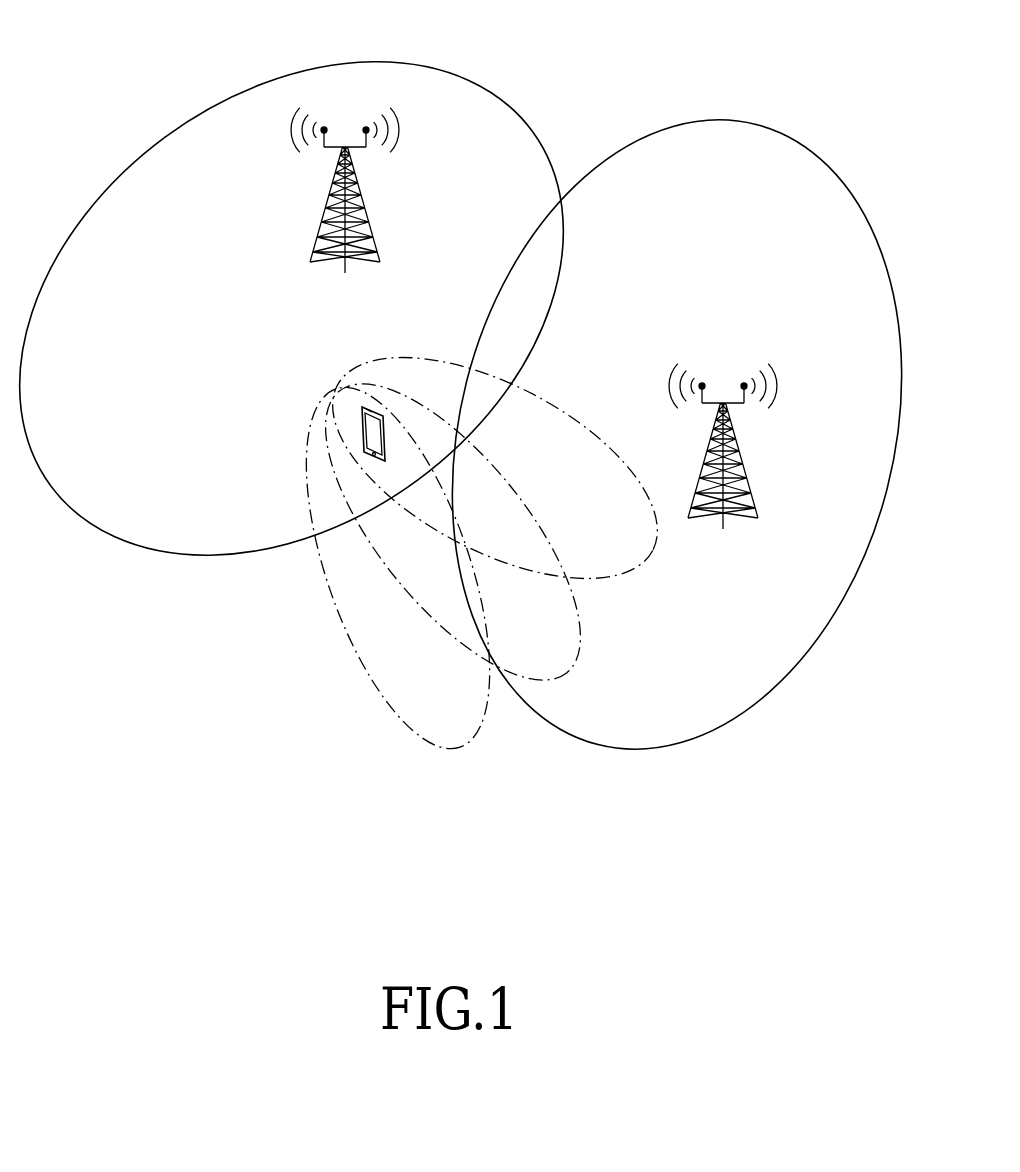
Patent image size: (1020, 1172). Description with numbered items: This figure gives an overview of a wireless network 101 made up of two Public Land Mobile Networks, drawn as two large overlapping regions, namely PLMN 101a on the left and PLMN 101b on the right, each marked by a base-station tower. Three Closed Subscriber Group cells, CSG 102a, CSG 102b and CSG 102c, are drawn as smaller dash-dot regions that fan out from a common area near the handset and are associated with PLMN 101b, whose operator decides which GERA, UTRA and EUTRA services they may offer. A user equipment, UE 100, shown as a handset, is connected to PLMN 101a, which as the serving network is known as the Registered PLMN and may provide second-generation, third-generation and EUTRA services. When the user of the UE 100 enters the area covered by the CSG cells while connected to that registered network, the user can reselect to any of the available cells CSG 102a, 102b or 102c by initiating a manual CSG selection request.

The UE 100 is at (360, 430).
The wireless network 101 is at (483, 462).
The PLMN 101a is at (385, 61).
The PLMN 101b is at (722, 119).
The CSG 102a is at (642, 563).
The CSG 102b is at (577, 660).
The CSG 102c is at (462, 747).